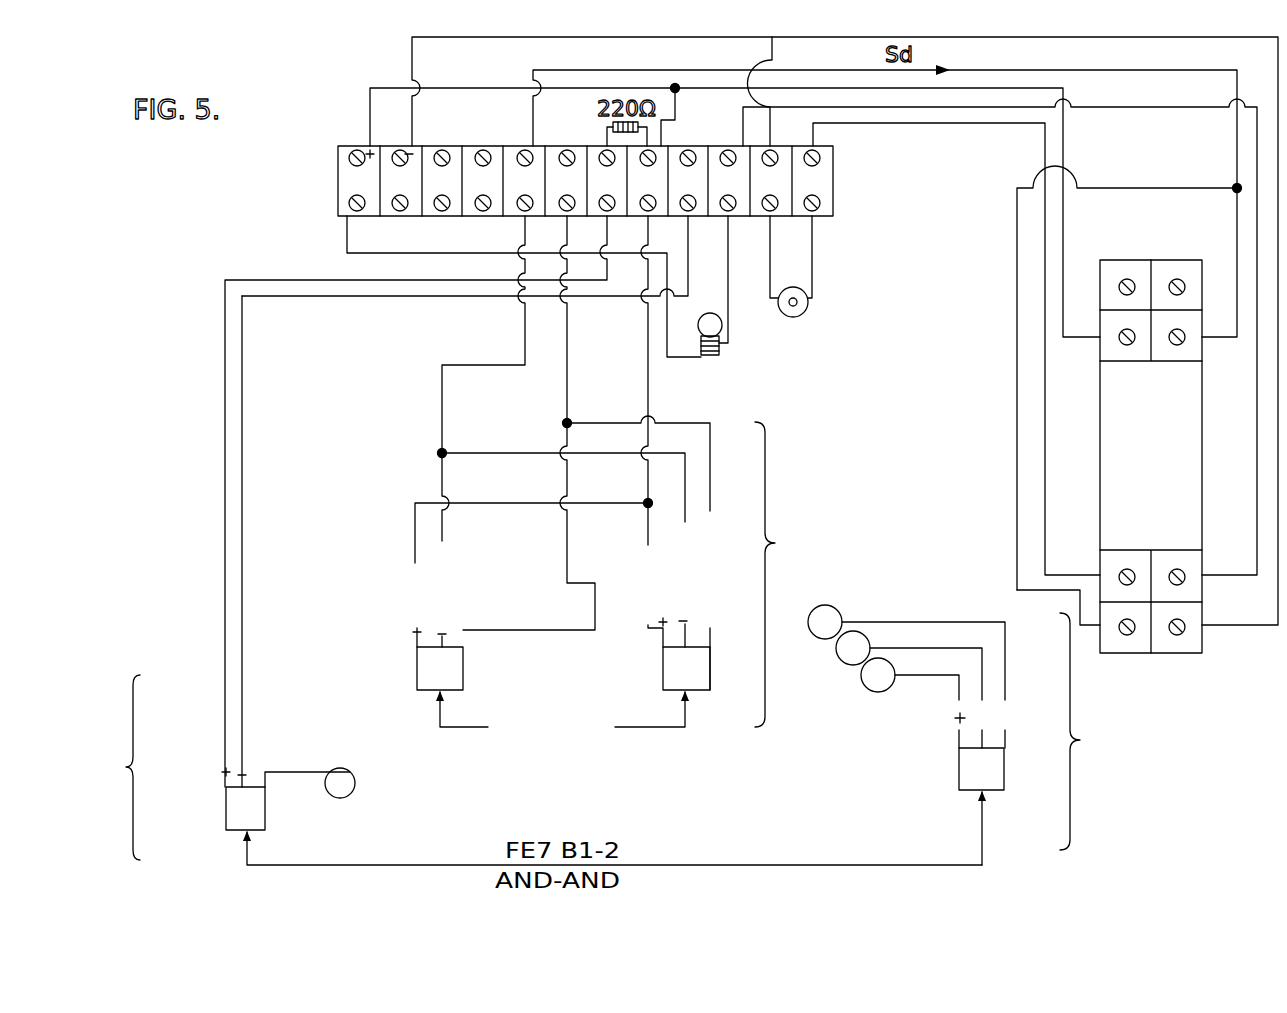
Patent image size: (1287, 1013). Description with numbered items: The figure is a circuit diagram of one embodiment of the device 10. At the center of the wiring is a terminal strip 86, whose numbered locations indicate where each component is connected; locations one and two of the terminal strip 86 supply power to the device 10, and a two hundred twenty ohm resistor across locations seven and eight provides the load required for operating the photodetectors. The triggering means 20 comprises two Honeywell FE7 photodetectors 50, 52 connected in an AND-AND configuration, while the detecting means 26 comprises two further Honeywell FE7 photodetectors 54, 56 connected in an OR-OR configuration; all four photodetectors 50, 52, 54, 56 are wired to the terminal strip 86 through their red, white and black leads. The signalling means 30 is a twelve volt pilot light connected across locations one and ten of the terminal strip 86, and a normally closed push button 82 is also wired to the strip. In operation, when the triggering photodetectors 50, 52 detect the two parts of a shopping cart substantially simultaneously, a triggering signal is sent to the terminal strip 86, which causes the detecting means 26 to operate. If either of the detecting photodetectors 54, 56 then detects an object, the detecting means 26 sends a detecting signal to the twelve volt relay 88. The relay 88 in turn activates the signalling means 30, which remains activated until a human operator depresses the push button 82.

The device 10 is at (204, 293).
The terminal strip 86 is at (331, 185).
The signalling means 30 is at (740, 368).
The push button 82 is at (850, 373).
The photodetector 56 is at (466, 672).
The photodetector 54 is at (661, 670).
The detecting means 26 is at (624, 588).
The photodetector 52 is at (270, 824).
The photodetector 50 is at (953, 775).
The triggering means 20 is at (960, 721).
The relay 88 is at (1102, 658).